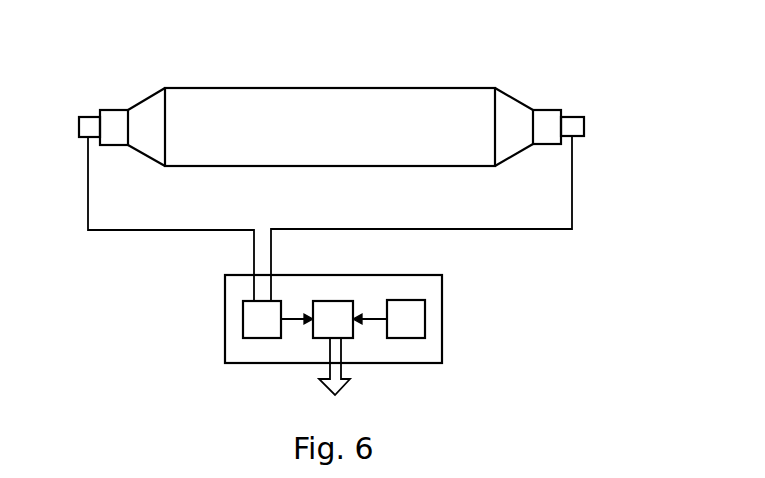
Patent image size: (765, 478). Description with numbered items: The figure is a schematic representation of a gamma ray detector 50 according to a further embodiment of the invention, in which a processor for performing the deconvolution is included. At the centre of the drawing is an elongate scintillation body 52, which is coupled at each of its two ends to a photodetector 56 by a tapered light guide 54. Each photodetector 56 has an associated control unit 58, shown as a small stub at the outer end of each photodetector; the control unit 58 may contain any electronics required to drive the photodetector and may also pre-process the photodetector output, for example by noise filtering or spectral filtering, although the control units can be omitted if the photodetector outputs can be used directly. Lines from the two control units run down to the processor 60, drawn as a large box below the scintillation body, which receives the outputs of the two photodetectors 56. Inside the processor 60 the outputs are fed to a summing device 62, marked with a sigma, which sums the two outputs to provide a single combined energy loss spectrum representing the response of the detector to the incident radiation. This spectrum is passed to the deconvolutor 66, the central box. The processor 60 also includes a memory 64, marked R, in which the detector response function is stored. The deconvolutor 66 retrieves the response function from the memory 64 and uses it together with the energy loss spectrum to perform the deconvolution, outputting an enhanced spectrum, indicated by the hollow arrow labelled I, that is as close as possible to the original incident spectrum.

The detector 50 is at (330, 97).
The scintillation body 52 is at (347, 137).
The light guide 54 is at (148, 98).
The photodetector 56 is at (112, 109).
The control unit 58 is at (79, 127).
The processor 60 is at (338, 349).
The summing device 62 is at (243, 318).
The memory 64 is at (425, 323).
The deconvolutor 66 is at (342, 338).